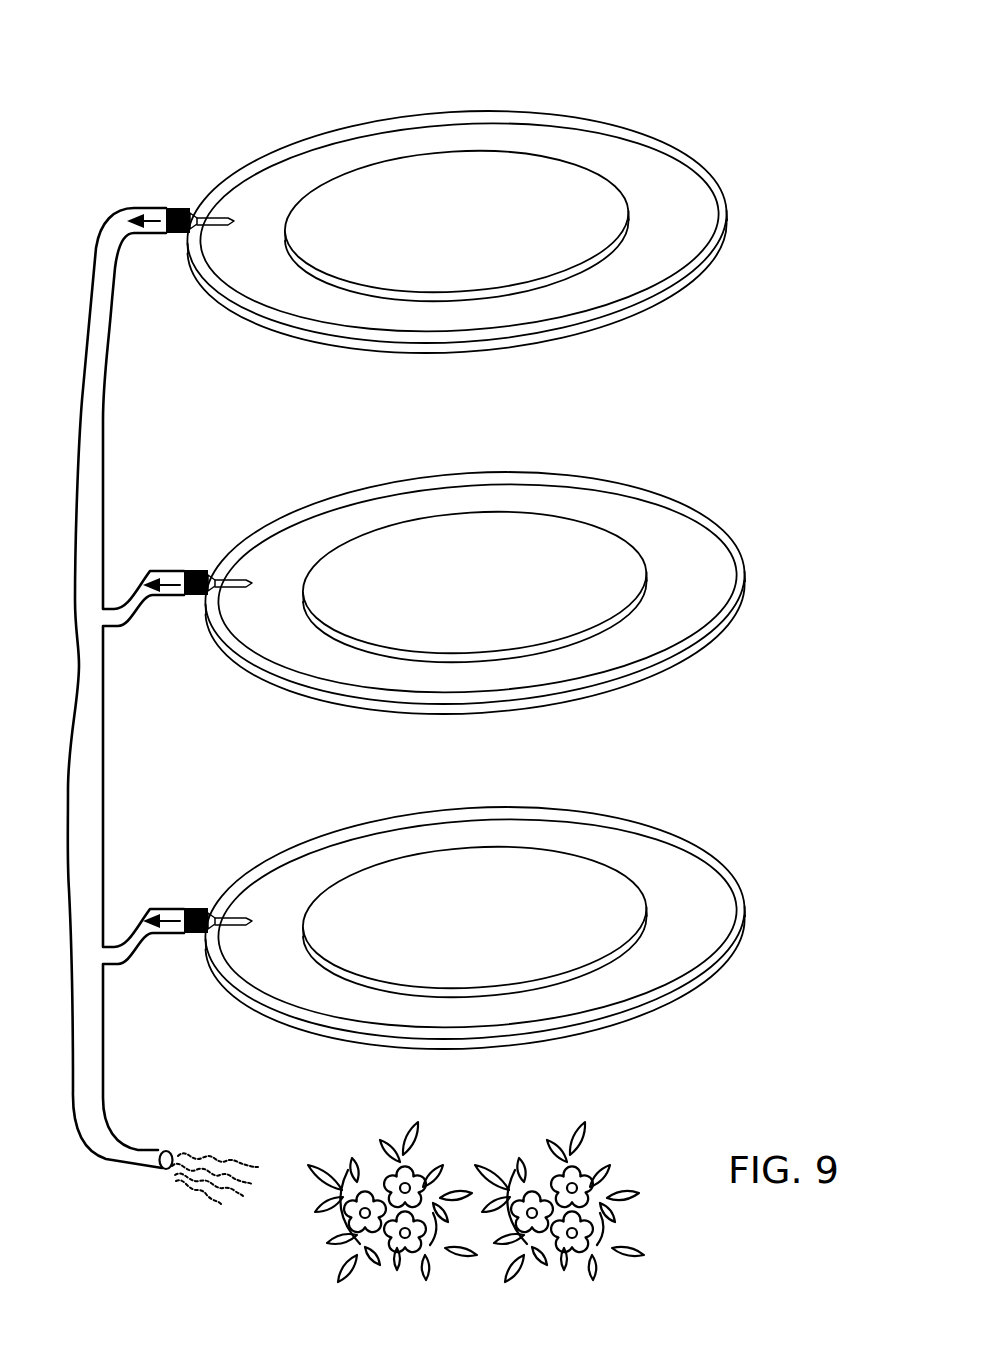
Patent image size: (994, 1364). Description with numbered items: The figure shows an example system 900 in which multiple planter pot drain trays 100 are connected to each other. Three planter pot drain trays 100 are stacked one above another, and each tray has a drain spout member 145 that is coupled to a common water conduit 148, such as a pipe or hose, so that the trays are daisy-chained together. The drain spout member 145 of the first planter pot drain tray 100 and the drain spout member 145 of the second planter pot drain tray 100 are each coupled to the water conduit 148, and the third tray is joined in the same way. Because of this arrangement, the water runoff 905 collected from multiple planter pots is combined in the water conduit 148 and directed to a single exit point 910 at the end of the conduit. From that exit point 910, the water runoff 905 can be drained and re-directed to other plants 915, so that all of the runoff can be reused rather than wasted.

The system 900 is at (813, 138).
The planter pot drain tray 100 is at (200, 115).
The drain spout member 145 is at (178, 235).
The water conduit 148 is at (140, 208).
The water runoff 905 is at (220, 1168).
The exit point 910 is at (169, 1148).
The plants 915 is at (610, 1140).